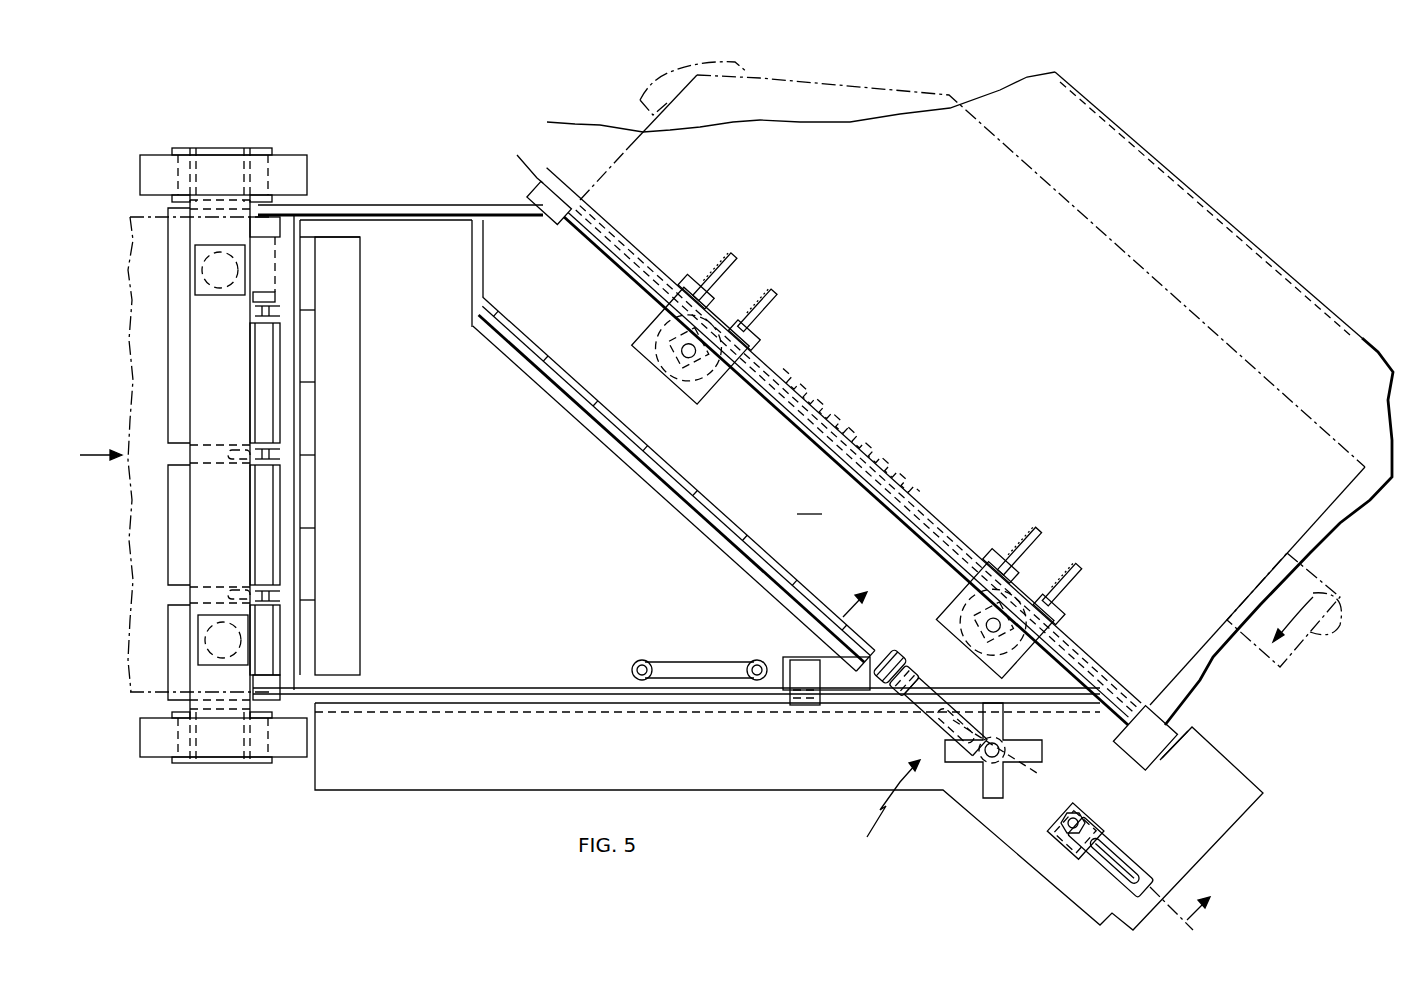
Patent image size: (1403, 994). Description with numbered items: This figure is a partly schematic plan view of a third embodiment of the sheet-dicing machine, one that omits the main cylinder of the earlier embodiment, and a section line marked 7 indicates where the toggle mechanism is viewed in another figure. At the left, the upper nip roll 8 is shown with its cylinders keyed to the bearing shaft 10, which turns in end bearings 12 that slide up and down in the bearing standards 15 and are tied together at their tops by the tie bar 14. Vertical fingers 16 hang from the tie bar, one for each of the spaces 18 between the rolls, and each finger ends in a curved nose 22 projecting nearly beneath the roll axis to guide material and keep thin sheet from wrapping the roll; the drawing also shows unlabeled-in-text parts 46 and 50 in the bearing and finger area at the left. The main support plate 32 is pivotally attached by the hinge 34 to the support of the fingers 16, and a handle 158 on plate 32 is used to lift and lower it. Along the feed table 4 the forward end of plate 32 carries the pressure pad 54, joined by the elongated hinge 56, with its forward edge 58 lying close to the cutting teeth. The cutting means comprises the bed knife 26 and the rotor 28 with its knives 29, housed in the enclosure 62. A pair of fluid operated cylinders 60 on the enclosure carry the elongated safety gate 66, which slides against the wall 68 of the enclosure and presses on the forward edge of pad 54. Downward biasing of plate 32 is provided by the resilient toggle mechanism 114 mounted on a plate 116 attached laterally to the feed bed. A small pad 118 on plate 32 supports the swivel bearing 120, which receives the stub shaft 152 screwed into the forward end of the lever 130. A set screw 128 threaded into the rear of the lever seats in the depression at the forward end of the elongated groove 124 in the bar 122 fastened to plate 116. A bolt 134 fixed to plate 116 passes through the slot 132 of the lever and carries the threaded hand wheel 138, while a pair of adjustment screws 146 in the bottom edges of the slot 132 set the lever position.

The feed table 4 is at (415, 212).
The section line 7 is at (1031, 750).
The nip roll 8 is at (168, 392).
The bearing shaft 10 is at (192, 176).
The end bearings 12 is at (185, 148).
The tie bar 14 is at (185, 242).
The bearing standards 15 is at (140, 180).
The vertical fingers 16 is at (268, 597).
The spaces 18 is at (180, 600).
The nose 22 is at (228, 600).
The bed knife 26 is at (881, 462).
The rotor 28 is at (1318, 572).
The knives 29 is at (813, 400).
The main support plate 32 is at (562, 574).
The hinge 34 is at (312, 641).
The slide block 46 is at (287, 373).
The bearing 50 is at (196, 283).
The pressure pad 54 is at (809, 503).
The elongated hinge 56 is at (669, 484).
The forward edge 58 is at (840, 440).
The fluid operated cylinders 60 is at (861, 461).
The enclosure 62 is at (1315, 302).
The safety gate 66 is at (848, 470).
The wall 68 is at (848, 465).
The resilient toggle mechanism 114 is at (875, 807).
The plate 116 is at (840, 778).
The pad 118 is at (866, 682).
The swivel bearing 120 is at (904, 680).
The bar 122 is at (1110, 856).
The elongated groove 124 is at (1114, 860).
The set screw 128 is at (1074, 818).
The lever 130 is at (1075, 831).
The slot 132 is at (945, 717).
The bolt 134 is at (1000, 748).
The hand wheel 138 is at (1043, 750).
The adjustment screws 146 is at (955, 725).
The stub shaft 152 is at (890, 667).
The handle 158 is at (722, 665).